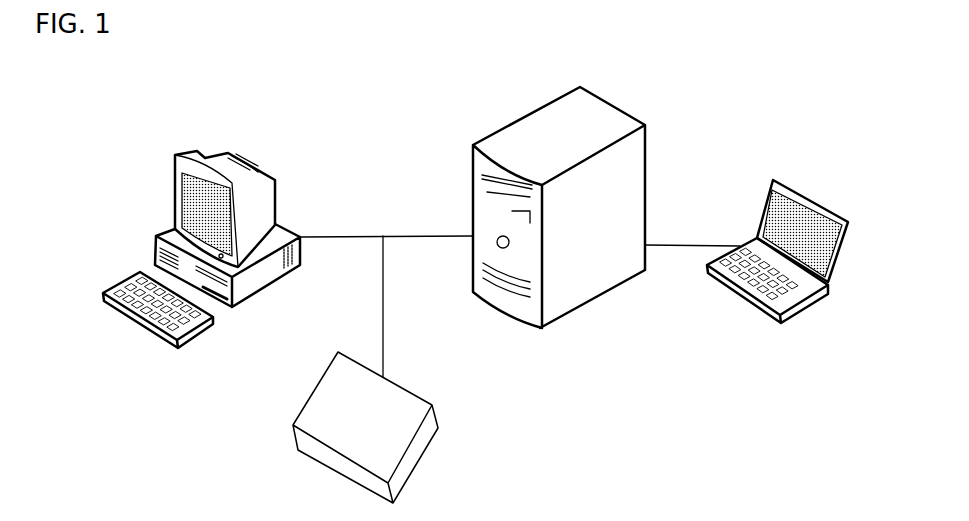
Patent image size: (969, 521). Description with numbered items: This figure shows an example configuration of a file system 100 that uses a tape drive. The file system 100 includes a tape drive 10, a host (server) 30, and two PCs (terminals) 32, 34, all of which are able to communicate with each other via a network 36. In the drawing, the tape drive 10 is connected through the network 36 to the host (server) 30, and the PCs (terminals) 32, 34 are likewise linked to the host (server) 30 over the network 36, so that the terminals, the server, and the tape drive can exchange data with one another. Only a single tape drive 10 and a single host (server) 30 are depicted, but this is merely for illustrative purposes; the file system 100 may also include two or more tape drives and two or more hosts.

The file system 100 is at (460, 46).
The tape drive 10 is at (382, 423).
The host (server) 30 is at (630, 112).
The PC (terminal) 32 is at (245, 165).
The PC (terminal) 34 is at (815, 202).
The network 36 is at (385, 325).